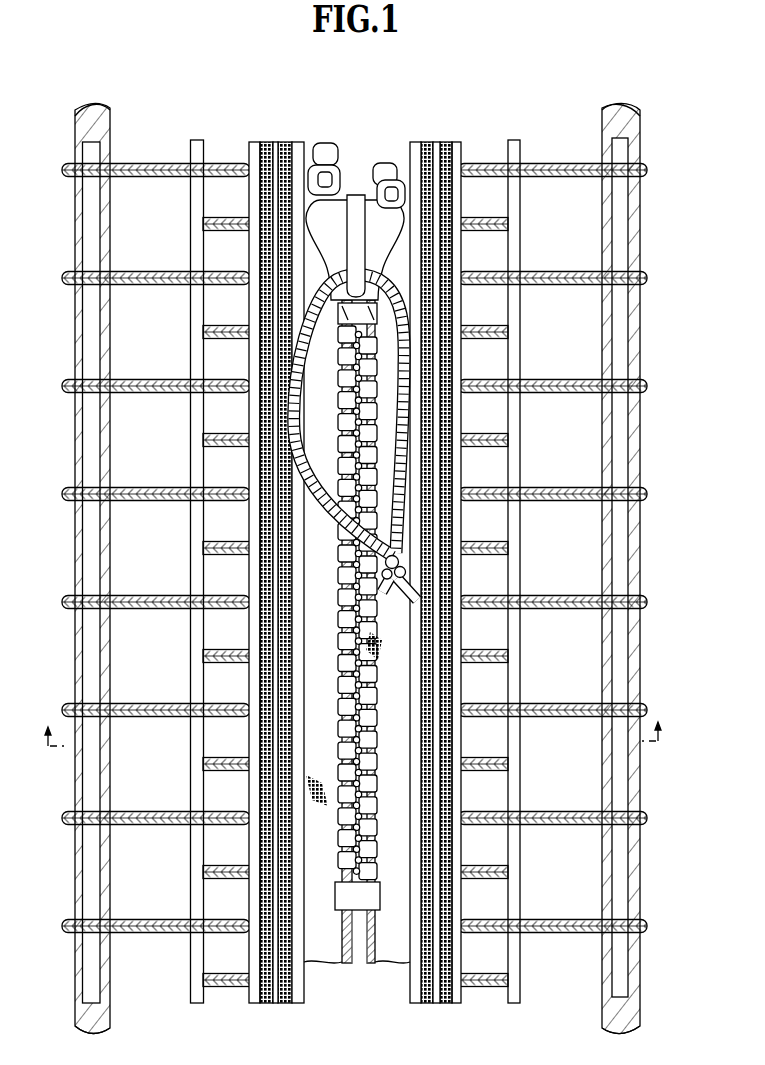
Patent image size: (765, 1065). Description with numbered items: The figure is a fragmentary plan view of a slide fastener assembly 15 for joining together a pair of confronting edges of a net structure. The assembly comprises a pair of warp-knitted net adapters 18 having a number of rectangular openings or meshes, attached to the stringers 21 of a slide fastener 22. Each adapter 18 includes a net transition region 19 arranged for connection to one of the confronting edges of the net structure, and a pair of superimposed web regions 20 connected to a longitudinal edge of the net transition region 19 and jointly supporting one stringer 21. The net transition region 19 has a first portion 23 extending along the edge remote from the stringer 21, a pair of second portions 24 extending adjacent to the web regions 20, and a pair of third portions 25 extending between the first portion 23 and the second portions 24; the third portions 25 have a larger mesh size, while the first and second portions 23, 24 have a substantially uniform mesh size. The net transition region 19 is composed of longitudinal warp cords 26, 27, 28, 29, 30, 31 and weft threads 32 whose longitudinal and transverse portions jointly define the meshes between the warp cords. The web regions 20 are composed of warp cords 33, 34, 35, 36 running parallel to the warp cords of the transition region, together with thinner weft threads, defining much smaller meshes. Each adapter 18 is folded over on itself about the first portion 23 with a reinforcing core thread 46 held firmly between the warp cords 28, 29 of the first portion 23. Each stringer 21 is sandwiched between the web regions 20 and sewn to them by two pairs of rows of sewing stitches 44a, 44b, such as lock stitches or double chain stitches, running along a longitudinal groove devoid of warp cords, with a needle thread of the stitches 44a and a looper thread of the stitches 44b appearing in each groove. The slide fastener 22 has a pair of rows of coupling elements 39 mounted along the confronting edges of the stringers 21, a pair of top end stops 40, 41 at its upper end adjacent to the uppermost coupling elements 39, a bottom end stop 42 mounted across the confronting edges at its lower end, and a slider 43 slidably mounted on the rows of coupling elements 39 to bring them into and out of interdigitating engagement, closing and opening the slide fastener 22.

The slide fastener assembly 15 is at (354, 102).
The warp-knitted net adapter 18 is at (354, 545).
The net transition region 19 is at (248, 62).
The web region 20 is at (308, 62).
The stringer 21 is at (322, 963).
The slide fastener 22 is at (356, 972).
The first portion 23 is at (100, 94).
The second portion 24 is at (255, 94).
The third portion 25 is at (195, 94).
The warp cord 26 is at (461, 1003).
The warp cord 27 is at (519, 1003).
The warp cord 28 is at (620, 980).
The warp cord 29 is at (92, 965).
The warp cord 30 is at (192, 1003).
The warp cord 31 is at (250, 1003).
The weft thread 32 is at (150, 596).
The warp cord 33 is at (411, 1003).
The warp cord 34 is at (437, 1003).
The warp cord 35 is at (275, 1003).
The warp cord 36 is at (302, 1003).
The coupling element 39 is at (350, 750).
The top end stop 40 is at (326, 148).
The top end stop 41 is at (380, 170).
The bottom end stop 42 is at (340, 897).
The slider 43 is at (357, 204).
The sewing stitches 44a is at (266, 142).
The sewing stitches 44b is at (285, 142).
The core thread 46 is at (96, 1022).